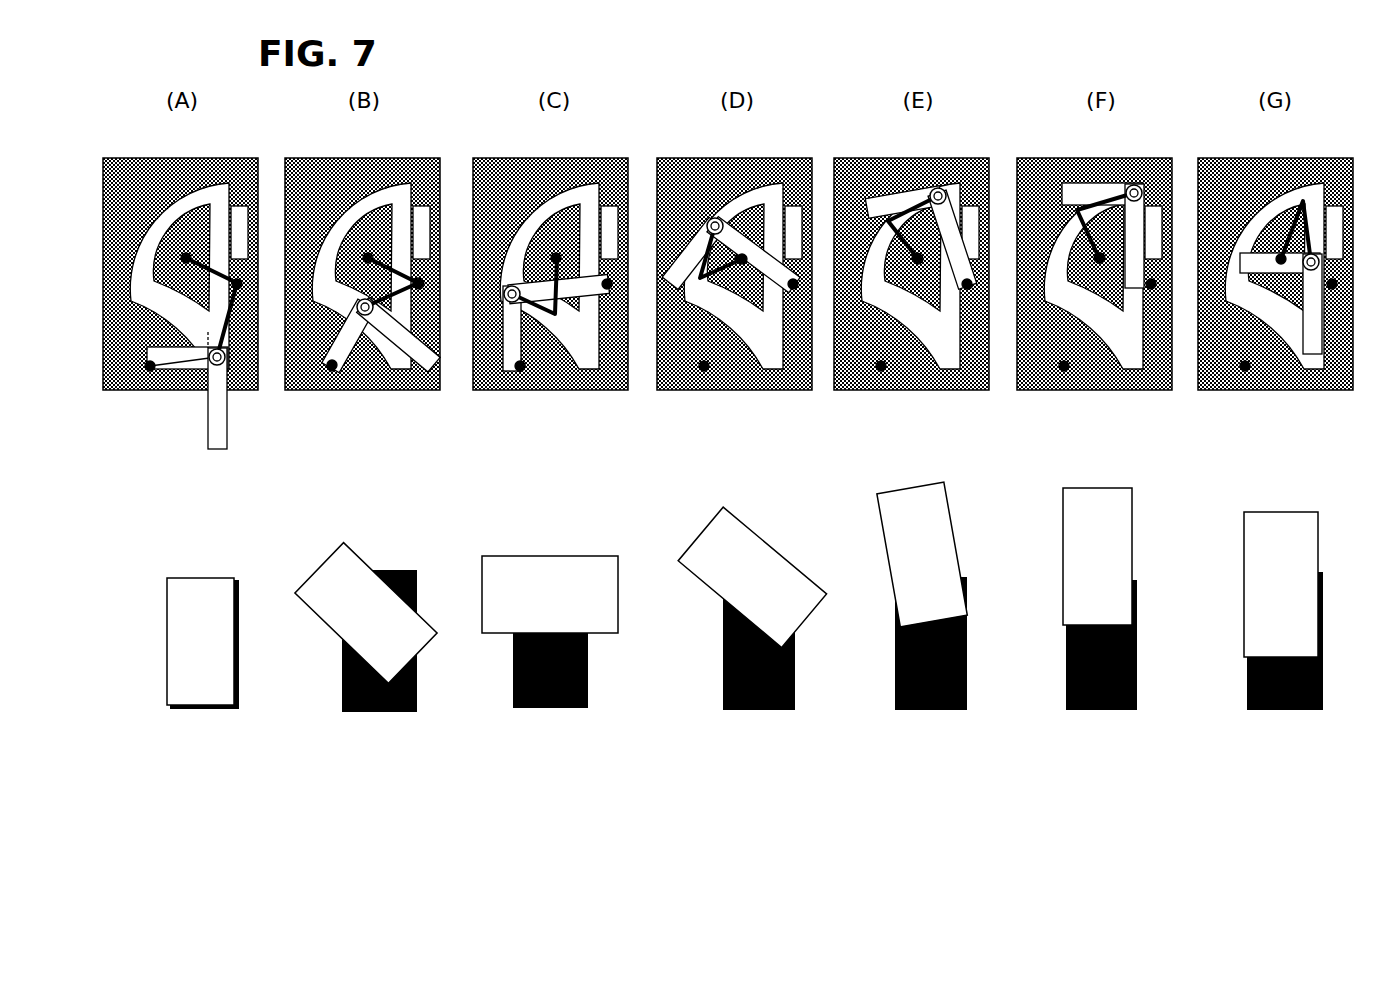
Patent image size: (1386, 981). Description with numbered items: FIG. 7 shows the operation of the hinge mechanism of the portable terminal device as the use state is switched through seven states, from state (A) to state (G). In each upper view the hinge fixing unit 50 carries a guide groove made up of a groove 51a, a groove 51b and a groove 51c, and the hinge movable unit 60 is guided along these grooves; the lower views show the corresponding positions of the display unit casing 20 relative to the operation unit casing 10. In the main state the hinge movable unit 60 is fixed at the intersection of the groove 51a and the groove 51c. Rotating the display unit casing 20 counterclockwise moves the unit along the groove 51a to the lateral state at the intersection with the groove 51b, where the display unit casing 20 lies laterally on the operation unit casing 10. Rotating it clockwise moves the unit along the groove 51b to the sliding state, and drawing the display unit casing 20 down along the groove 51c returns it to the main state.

The hinge fixing unit 50 is at (201, 270).
The groove 51a is at (187, 388).
The groove 51b is at (188, 247).
The groove 51c is at (237, 288).
The hinge movable unit 60 is at (254, 390).
The operation unit casing 10 is at (238, 630).
The display unit casing 20 is at (200, 578).